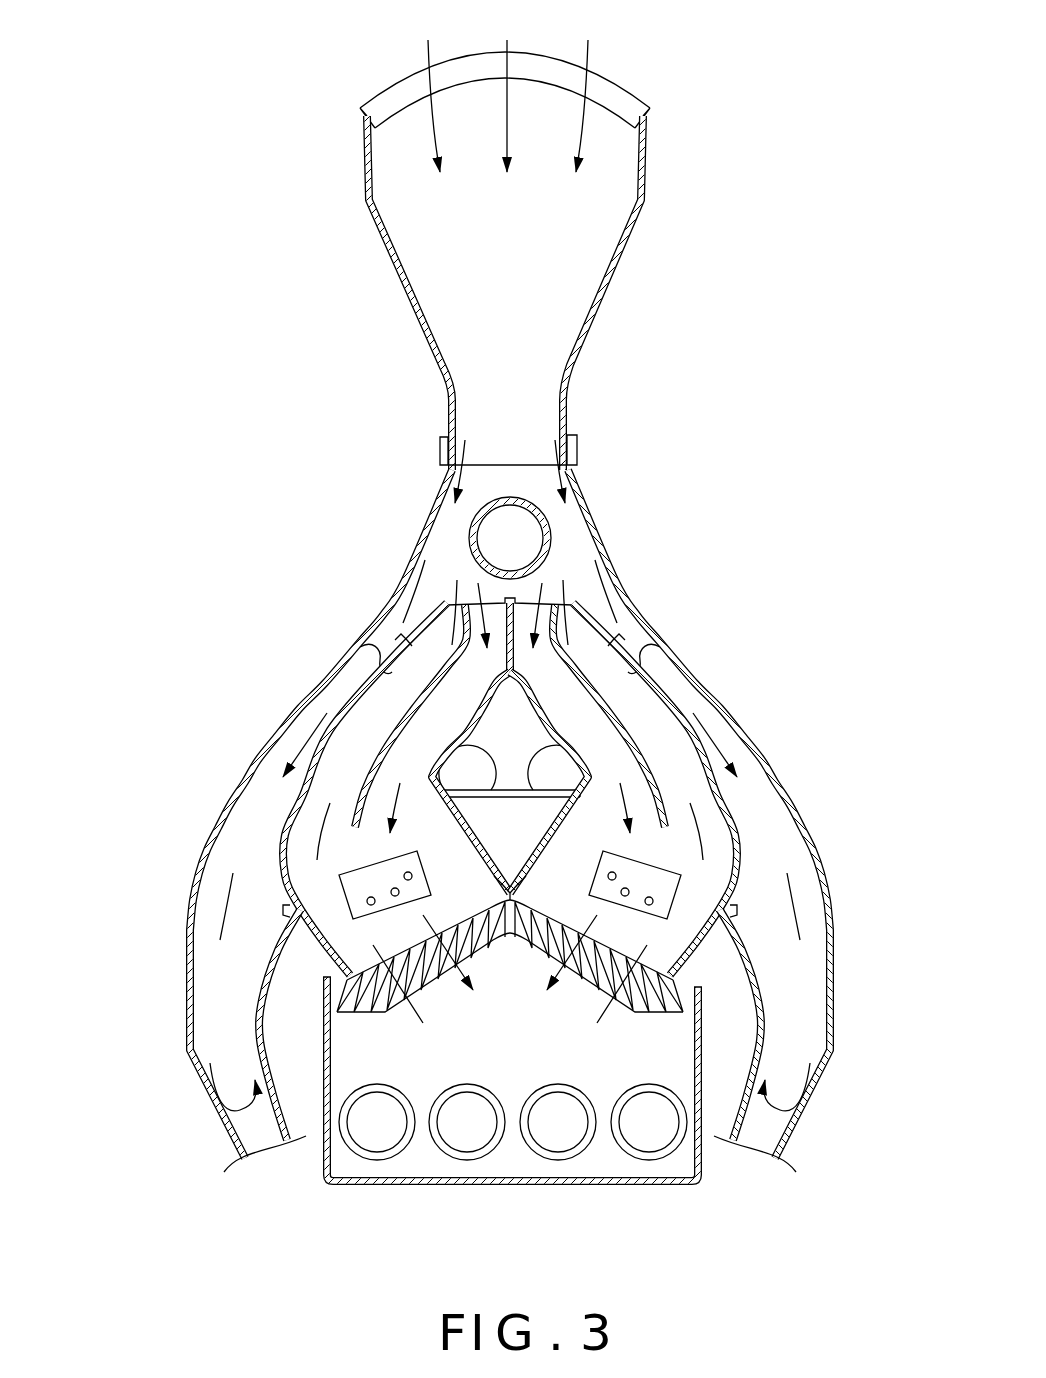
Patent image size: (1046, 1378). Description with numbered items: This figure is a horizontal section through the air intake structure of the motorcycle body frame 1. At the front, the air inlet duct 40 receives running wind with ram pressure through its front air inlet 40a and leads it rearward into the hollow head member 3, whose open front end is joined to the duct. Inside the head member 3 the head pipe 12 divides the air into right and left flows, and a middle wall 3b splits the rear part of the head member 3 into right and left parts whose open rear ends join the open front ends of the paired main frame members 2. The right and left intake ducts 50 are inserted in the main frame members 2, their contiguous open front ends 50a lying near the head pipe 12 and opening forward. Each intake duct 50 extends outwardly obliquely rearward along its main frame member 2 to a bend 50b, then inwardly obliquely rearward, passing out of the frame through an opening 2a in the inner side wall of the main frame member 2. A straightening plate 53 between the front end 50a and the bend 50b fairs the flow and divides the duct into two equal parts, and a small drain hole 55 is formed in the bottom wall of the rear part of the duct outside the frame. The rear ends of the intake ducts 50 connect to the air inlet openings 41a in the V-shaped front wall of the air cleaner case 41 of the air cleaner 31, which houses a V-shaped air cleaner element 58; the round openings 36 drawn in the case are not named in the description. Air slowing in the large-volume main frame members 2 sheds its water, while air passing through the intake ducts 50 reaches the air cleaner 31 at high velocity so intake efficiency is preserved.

The body frame 1 is at (253, 720).
The main frame member 2 is at (200, 863).
The opening 2a is at (787, 970).
The head member 3 is at (425, 520).
The middle wall 3b is at (510, 790).
The head pipe 12 is at (507, 497).
The air cleaner 31 is at (317, 1153).
The intake passage 36 is at (450, 1155).
The air inlet duct 40 is at (415, 308).
The front air inlet 40a is at (608, 103).
The air cleaner case 41 is at (705, 1160).
The air inlet opening 41a is at (510, 980).
The intake duct 50 is at (515, 776).
The front end 50a is at (457, 592).
The bend 50b is at (287, 800).
The straightening plate 53 is at (433, 700).
The drain hole 55 is at (393, 890).
The air cleaner element 58 is at (472, 945).